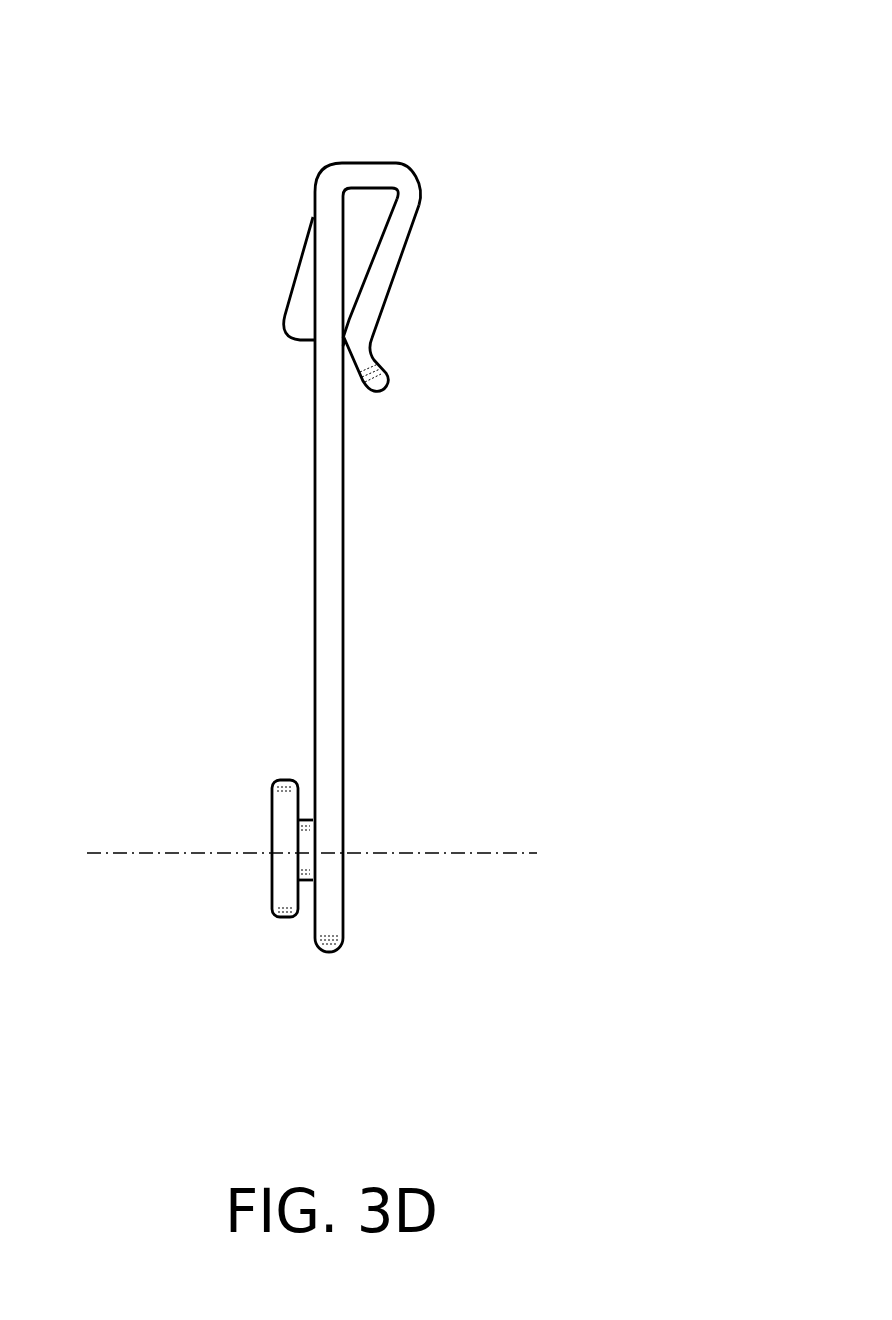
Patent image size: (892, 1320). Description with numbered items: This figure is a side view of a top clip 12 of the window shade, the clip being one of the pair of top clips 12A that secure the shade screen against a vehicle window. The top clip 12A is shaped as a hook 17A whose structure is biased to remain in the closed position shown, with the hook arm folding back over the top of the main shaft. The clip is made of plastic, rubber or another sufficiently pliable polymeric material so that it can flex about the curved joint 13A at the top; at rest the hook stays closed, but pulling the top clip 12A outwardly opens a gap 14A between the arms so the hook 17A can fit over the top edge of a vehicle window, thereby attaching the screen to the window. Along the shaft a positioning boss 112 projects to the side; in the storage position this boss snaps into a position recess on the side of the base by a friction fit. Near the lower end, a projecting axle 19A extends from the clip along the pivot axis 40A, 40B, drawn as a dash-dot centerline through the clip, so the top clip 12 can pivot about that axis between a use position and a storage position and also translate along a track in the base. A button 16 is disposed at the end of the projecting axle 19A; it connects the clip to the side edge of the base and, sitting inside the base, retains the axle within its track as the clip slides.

The top clip 12 is at (302, 70).
The top clip 12A is at (324, 451).
The curved joint 13A is at (344, 172).
The gap 14A is at (394, 176).
The hook 17A is at (395, 247).
The positioning boss 112 is at (299, 307).
The button 16 is at (274, 833).
The projecting axle 19A is at (303, 882).
The pivot axis 40A is at (373, 854).
The pivot axis 40B is at (373, 854).